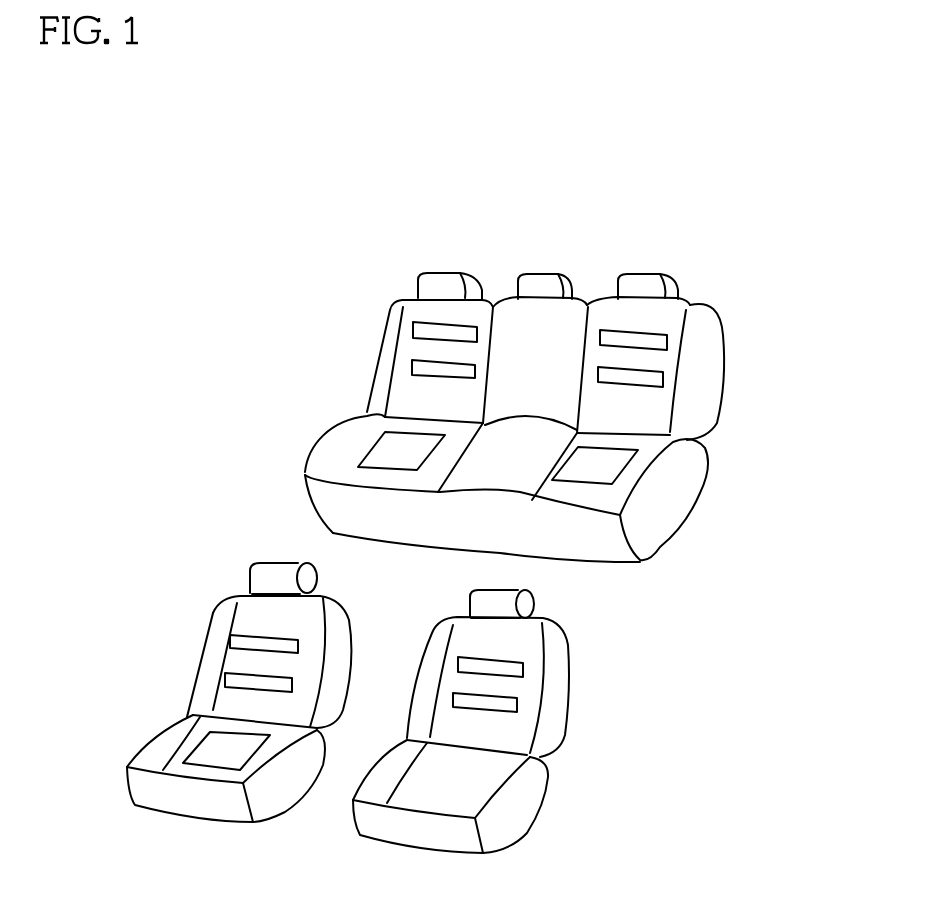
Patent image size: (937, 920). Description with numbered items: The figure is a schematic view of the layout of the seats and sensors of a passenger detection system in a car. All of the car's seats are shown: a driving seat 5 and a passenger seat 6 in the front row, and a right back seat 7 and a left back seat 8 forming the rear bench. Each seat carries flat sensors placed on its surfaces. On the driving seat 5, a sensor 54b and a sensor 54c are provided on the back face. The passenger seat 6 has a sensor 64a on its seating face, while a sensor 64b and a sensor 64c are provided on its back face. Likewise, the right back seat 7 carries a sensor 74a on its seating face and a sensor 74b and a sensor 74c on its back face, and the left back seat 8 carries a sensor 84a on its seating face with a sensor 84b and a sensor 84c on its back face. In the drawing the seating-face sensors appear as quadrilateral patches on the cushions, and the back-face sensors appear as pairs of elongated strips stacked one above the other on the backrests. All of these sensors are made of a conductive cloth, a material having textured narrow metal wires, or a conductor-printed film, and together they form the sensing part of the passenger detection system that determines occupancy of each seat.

The driving seat 5 is at (530, 818).
The passenger seat 6 is at (125, 783).
The right back seat 7 is at (303, 497).
The left back seat 8 is at (687, 515).
The sensor 54b is at (520, 702).
The sensor 54c is at (525, 665).
The sensor 64a is at (207, 747).
The sensor 64b is at (225, 678).
The sensor 64c is at (230, 640).
The sensor 74a is at (380, 452).
The sensor 74b is at (412, 367).
The sensor 74c is at (413, 327).
The sensor 84a is at (613, 467).
The sensor 84b is at (663, 377).
The sensor 84c is at (667, 337).